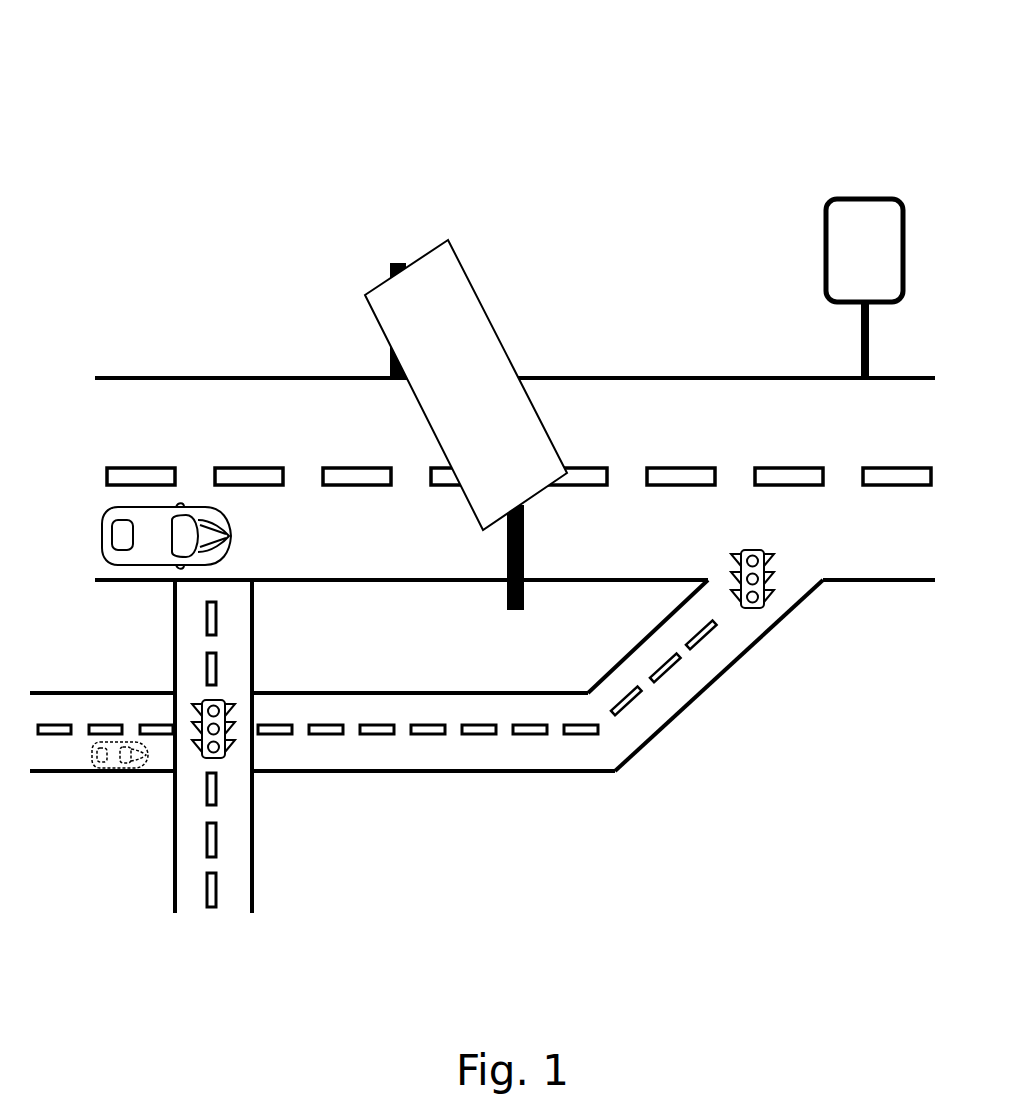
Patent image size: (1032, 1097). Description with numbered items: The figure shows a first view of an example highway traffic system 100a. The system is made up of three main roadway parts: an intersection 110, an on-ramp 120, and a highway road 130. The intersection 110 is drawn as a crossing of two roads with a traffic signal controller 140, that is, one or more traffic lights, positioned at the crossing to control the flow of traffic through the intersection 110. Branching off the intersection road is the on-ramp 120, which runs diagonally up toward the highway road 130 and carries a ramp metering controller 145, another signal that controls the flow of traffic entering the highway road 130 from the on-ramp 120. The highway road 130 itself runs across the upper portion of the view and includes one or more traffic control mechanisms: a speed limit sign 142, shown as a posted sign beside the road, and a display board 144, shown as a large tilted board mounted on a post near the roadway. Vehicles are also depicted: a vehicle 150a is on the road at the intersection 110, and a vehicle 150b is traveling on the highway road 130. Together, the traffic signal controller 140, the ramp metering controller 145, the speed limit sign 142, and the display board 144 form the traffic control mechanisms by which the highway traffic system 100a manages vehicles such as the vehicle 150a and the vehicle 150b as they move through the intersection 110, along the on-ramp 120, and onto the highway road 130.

The highway traffic system 100a is at (159, 82).
The intersection 110 is at (172, 697).
The on-ramp 120 is at (656, 636).
The highway road 130 is at (184, 382).
The traffic signal controller 140 is at (220, 760).
The speed limit sign 142 is at (822, 206).
The display board 144 is at (489, 397).
The ramp metering controller 145 is at (750, 610).
The vehicle 150a is at (120, 770).
The vehicle 150b is at (120, 508).